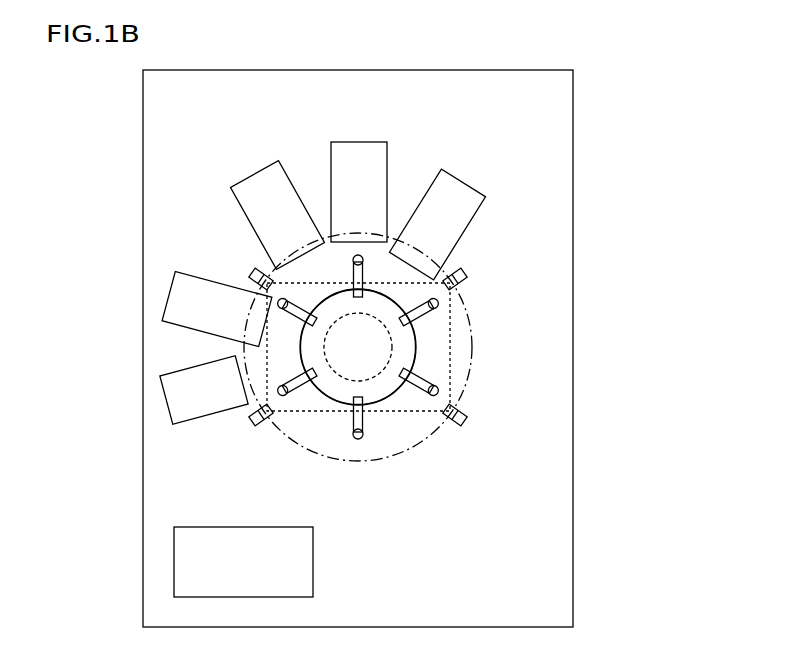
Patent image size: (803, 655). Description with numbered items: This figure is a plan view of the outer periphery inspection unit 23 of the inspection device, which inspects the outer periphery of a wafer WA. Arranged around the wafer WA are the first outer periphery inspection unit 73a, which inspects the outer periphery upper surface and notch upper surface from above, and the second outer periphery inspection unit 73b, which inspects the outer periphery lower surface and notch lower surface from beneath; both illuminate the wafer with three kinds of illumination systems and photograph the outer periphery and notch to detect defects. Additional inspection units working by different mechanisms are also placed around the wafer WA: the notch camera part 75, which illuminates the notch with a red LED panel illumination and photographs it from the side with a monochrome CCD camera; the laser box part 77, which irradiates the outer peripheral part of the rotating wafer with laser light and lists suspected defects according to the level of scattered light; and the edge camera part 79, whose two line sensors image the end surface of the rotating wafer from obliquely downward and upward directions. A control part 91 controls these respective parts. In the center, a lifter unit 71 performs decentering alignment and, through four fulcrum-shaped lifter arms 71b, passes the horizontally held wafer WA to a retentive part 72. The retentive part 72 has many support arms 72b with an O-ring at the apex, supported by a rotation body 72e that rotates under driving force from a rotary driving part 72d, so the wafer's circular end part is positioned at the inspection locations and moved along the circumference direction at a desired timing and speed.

The outer periphery inspection unit 23 is at (574, 288).
The lifter unit 71 is at (482, 432).
The lifter arms 71b is at (250, 270).
The retentive part 72 is at (452, 312).
The support arms 72b is at (427, 377).
The rotary driving part 72d is at (367, 312).
The rotation body 72e is at (392, 392).
The wafer WA is at (413, 452).
The first outer periphery inspection unit 73a is at (458, 192).
The second outer periphery inspection unit 73b is at (185, 282).
The notch camera part 75 is at (178, 415).
The laser box part 77 is at (357, 152).
The edge camera part 79 is at (265, 180).
The control part 91 is at (302, 562).